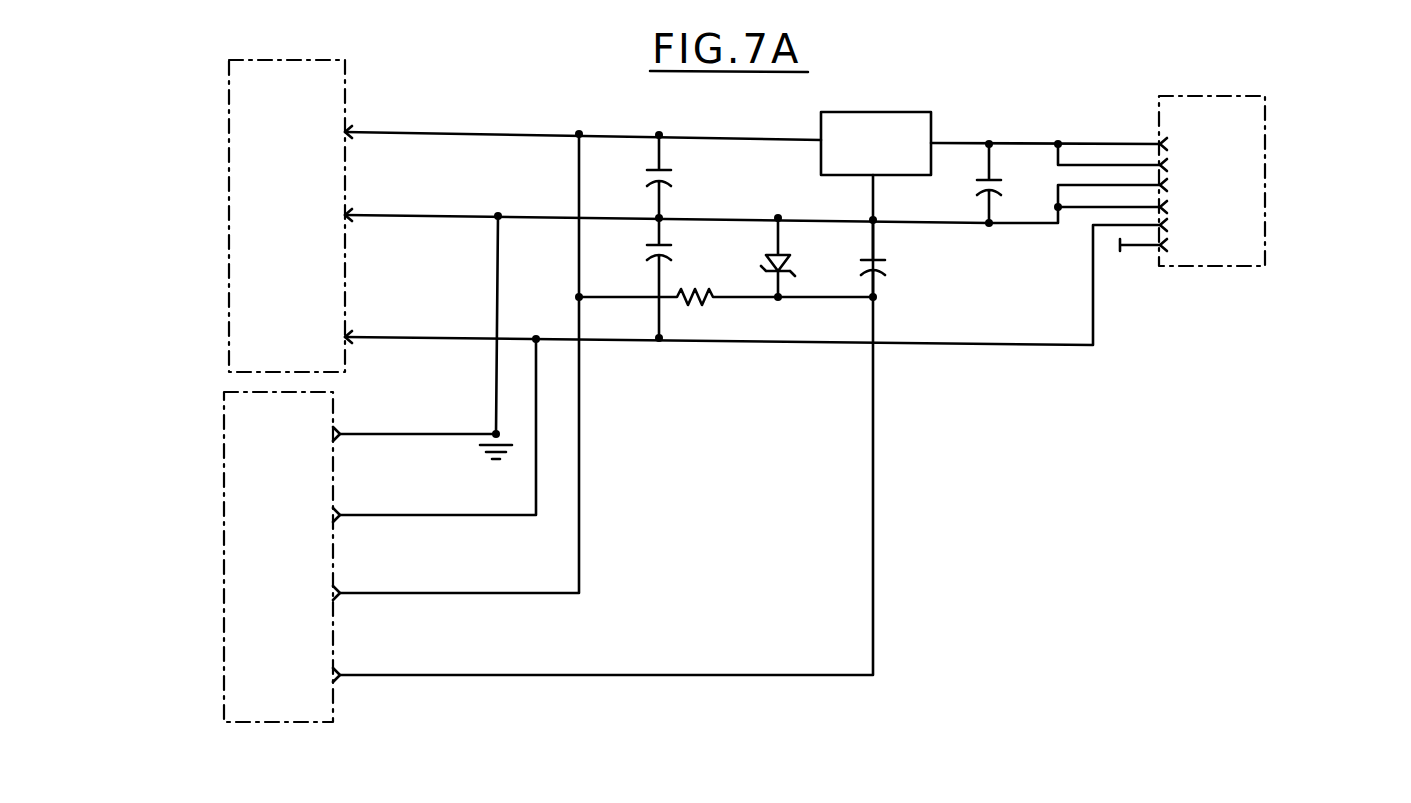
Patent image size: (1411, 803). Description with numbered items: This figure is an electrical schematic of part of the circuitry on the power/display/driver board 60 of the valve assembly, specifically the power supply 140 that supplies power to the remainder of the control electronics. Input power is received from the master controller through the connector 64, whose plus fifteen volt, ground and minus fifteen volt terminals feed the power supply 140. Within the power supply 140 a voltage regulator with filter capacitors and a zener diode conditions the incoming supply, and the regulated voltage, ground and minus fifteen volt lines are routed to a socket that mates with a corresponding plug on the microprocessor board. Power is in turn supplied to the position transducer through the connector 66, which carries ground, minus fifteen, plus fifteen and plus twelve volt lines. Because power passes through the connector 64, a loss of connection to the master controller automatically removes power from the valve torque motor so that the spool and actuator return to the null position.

The connector 64 is at (306, 76).
The connector 66 is at (330, 406).
The power/display/driver board 60 is at (963, 53).
The power supply 140 is at (954, 117).